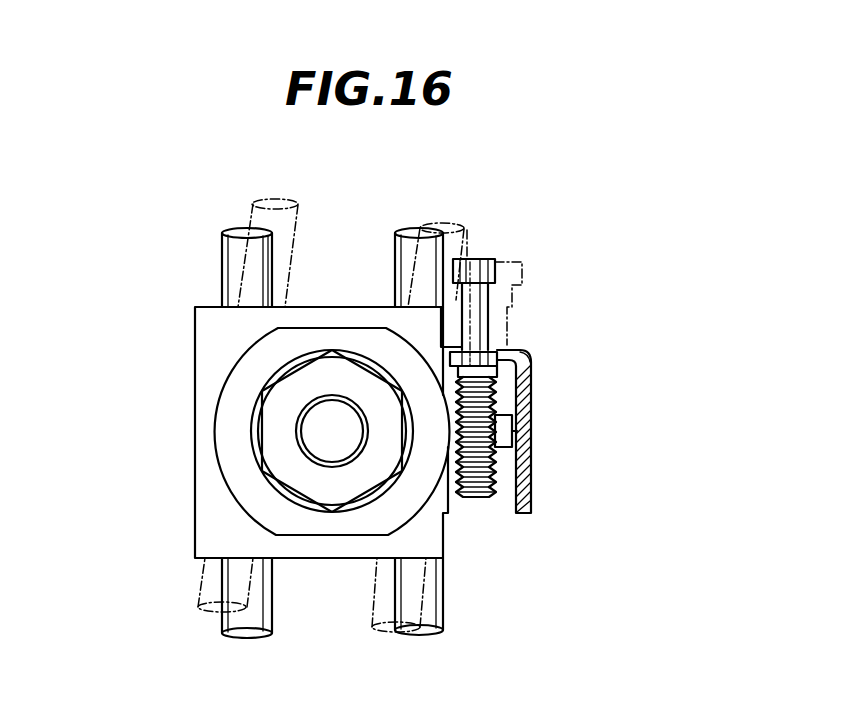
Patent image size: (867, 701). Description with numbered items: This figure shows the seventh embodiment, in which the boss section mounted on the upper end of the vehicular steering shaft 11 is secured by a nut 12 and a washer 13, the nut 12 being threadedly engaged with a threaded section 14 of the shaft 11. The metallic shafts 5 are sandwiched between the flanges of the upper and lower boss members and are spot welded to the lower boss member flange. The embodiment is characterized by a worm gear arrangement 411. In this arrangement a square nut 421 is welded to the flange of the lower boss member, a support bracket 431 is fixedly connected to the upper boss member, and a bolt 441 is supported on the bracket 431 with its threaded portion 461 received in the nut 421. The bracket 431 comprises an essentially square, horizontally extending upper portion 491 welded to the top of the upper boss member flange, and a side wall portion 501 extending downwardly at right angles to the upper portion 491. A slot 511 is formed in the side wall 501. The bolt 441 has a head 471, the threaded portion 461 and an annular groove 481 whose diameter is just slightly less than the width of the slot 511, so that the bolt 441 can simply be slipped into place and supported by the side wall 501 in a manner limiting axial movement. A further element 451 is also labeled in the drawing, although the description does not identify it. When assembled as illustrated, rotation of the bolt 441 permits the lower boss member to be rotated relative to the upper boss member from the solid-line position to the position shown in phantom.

The metallic shafts 5 is at (398, 249).
The vehicular steering shaft 11 is at (220, 432).
The nut 12 is at (263, 398).
The washer 13 is at (273, 375).
The threaded section 14 is at (305, 430).
The worm gear arrangement 411 is at (604, 306).
The square nut 421 is at (510, 423).
The support bracket 431 is at (528, 367).
The bolt 441 is at (477, 500).
The connecting pin 451 is at (512, 432).
The threaded portion 461 is at (497, 462).
The head 471 is at (485, 258).
The annular groove 481 is at (450, 373).
The upper portion 491 is at (203, 528).
The side wall portion 501 is at (517, 349).
The slot 511 is at (492, 347).